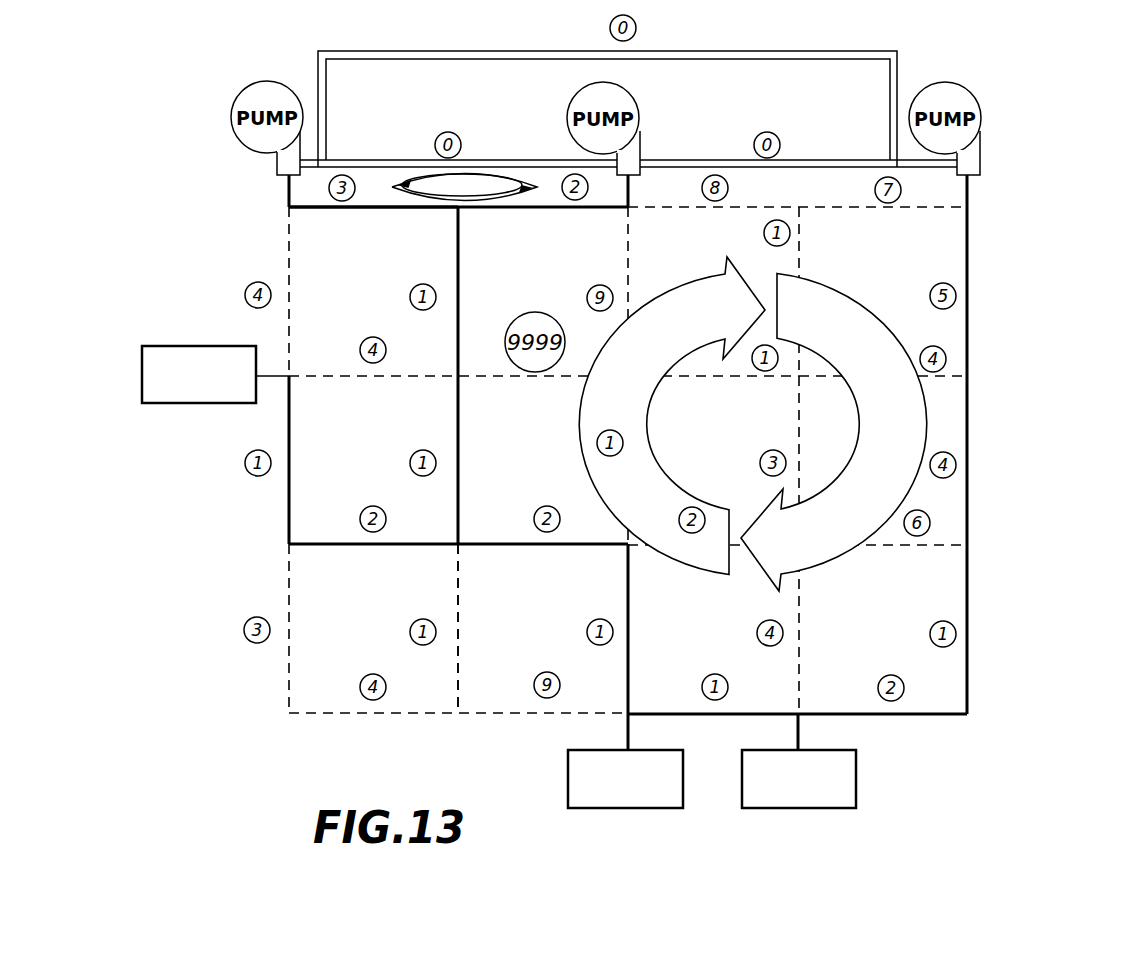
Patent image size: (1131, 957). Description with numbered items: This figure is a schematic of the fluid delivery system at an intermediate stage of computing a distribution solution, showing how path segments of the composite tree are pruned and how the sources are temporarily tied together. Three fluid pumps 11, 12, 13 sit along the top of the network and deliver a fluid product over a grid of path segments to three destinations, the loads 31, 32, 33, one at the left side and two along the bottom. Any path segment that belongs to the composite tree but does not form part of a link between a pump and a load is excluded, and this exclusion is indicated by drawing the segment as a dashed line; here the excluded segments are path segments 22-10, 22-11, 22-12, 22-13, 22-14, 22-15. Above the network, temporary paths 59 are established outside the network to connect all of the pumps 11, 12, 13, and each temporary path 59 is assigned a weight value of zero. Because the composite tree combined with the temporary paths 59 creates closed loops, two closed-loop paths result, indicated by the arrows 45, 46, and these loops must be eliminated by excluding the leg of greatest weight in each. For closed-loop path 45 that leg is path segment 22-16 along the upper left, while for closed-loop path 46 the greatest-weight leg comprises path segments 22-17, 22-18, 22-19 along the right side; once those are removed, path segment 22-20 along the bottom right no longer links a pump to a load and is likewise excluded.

The fluid pump 11 is at (240, 145).
The fluid pump 12 is at (640, 125).
The fluid pump 13 is at (980, 125).
The temporary path 59 is at (878, 160).
The closed-loop path 45 is at (543, 192).
The closed-loop path 46 is at (931, 405).
The load 31 is at (177, 404).
The load 32 is at (567, 777).
The load 33 is at (856, 786).
The path segment 22-10 is at (803, 258).
The path segment 22-11 is at (786, 377).
The path segment 22-12 is at (800, 436).
The path segment 22-13 is at (950, 376).
The path segment 22-14 is at (289, 690).
The path segment 22-15 is at (457, 680).
The path segment 22-16 is at (410, 208).
The path segment 22-17 is at (969, 250).
The path segment 22-18 is at (969, 427).
The path segment 22-19 is at (969, 643).
The path segment 22-20 is at (921, 720).